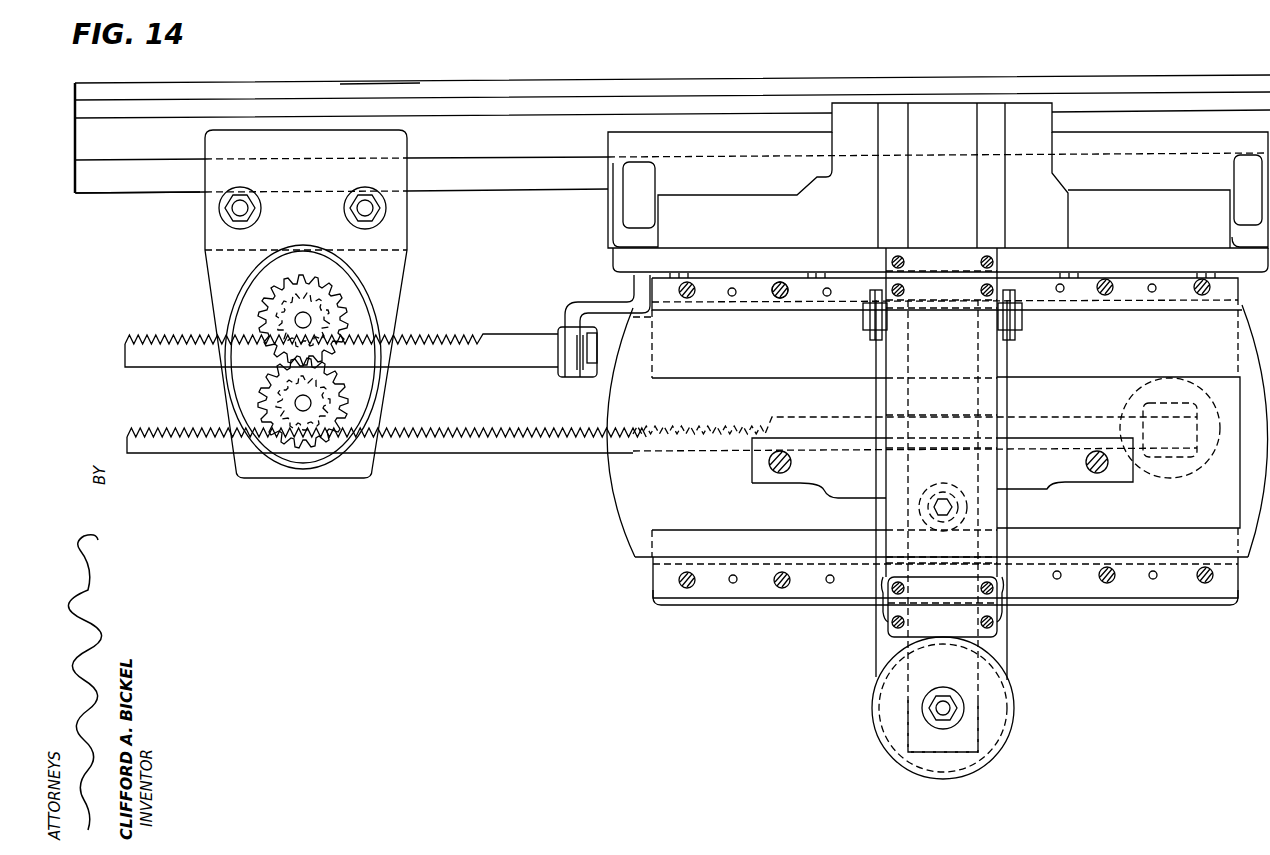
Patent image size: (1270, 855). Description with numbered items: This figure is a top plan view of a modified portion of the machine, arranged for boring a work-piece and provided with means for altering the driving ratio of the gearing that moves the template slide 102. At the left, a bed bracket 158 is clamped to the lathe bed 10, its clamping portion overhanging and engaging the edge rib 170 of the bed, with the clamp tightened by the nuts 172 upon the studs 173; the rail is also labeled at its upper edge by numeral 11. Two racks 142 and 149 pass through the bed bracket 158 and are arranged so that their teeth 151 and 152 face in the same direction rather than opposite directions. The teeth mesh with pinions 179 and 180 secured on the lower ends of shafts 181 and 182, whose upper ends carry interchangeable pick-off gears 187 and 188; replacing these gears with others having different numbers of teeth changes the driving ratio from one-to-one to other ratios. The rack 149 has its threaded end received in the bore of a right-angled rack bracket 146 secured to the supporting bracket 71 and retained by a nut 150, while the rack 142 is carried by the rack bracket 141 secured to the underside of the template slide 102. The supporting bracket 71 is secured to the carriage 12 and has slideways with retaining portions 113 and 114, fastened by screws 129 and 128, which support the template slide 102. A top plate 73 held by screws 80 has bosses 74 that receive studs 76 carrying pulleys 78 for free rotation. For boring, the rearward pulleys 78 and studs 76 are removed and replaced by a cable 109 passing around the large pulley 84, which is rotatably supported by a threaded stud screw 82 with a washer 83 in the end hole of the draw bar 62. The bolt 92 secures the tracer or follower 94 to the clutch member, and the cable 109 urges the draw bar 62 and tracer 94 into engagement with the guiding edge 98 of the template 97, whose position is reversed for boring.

The lathe bed 10 is at (82, 141).
The rail top flange 11 is at (377, 88).
The edge rib 170 is at (121, 184).
The carriage 12 is at (606, 215).
The bed bracket 158 is at (204, 270).
The nuts 172 is at (352, 200).
The studs 173 is at (353, 213).
The pinion 180 is at (262, 313).
The shaft 182 is at (302, 318).
The pick-off gear 188 is at (345, 303).
The pinion 179 is at (275, 408).
The shaft 181 is at (304, 410).
The pick-off gear 187 is at (345, 397).
The teeth 152 is at (171, 342).
The rack 149 is at (188, 372).
The teeth 151 is at (438, 430).
The rack 142 is at (437, 456).
The nut 150 is at (588, 379).
The rack bracket 146 is at (597, 302).
The retaining portion 113 is at (735, 313).
The screws 129 is at (687, 299).
The screw 128 is at (780, 299).
The template slide 102 is at (627, 511).
The cable 109 is at (1010, 394).
The rack bracket 141 is at (1164, 382).
The guiding edge 98 is at (1060, 489).
The template 97 is at (1125, 483).
The tracer or follower 94 is at (942, 490).
The bolt 92 is at (928, 508).
The top plate 73 is at (890, 396).
The screws 80 is at (982, 290).
The bosses 74 is at (1002, 320).
The studs 76 is at (865, 318).
The pulleys 78 is at (871, 336).
The retaining portion 114 is at (753, 604).
The supporting bracket 71 is at (677, 606).
The large pulley 84 is at (931, 766).
The draw bar 62 is at (990, 679).
The washer 83 is at (925, 704).
The threaded stud screw 82 is at (928, 713).